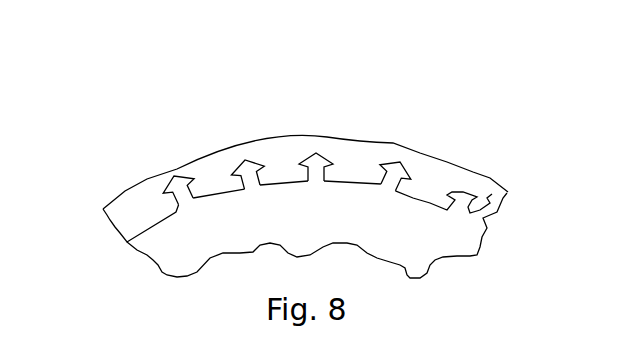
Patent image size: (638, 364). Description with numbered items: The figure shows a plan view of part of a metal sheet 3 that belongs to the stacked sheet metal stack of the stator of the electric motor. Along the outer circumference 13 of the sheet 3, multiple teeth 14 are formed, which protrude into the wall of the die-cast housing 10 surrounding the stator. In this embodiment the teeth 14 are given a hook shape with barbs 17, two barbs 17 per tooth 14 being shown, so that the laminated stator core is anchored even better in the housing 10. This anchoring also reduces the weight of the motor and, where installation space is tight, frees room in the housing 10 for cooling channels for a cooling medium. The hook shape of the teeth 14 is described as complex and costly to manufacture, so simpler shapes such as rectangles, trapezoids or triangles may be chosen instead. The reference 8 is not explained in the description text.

The metal sheet 3 is at (291, 221).
The slot 8 is at (361, 169).
The die-cast housing 10 is at (356, 135).
The outer circumference 13 is at (214, 191).
The teeth 14 is at (169, 190).
The barb 17 is at (172, 181).